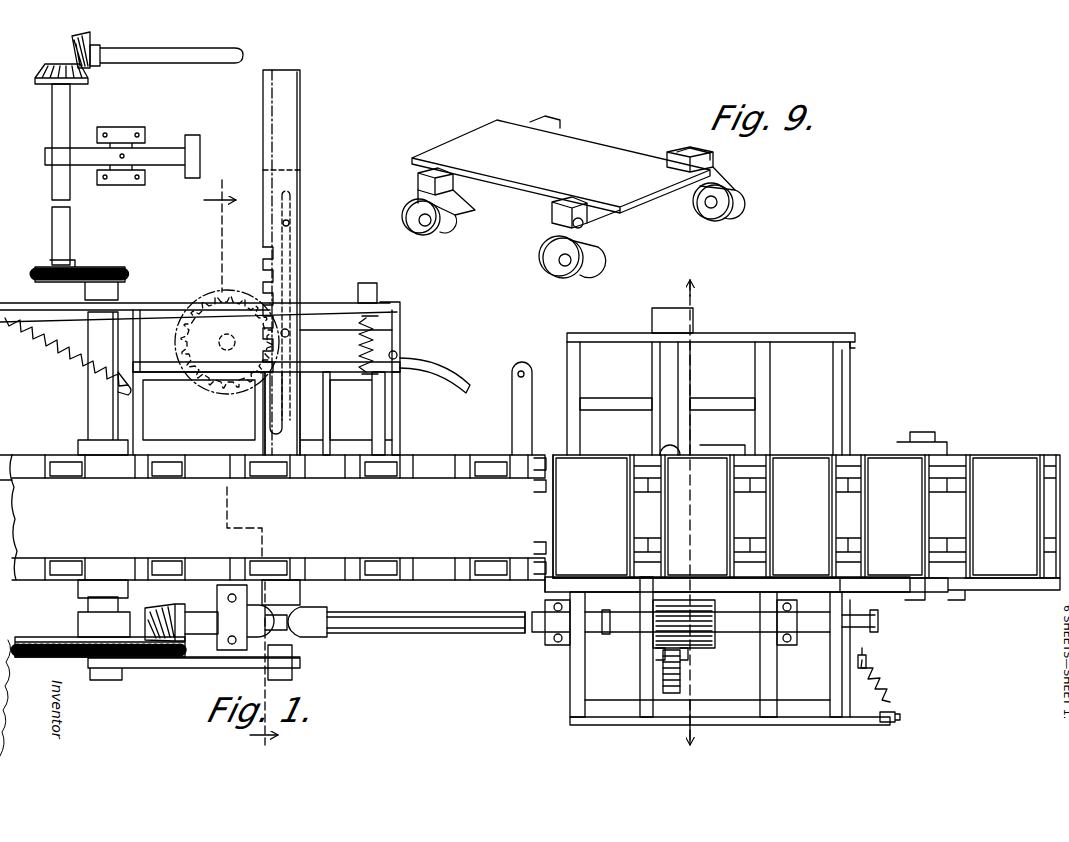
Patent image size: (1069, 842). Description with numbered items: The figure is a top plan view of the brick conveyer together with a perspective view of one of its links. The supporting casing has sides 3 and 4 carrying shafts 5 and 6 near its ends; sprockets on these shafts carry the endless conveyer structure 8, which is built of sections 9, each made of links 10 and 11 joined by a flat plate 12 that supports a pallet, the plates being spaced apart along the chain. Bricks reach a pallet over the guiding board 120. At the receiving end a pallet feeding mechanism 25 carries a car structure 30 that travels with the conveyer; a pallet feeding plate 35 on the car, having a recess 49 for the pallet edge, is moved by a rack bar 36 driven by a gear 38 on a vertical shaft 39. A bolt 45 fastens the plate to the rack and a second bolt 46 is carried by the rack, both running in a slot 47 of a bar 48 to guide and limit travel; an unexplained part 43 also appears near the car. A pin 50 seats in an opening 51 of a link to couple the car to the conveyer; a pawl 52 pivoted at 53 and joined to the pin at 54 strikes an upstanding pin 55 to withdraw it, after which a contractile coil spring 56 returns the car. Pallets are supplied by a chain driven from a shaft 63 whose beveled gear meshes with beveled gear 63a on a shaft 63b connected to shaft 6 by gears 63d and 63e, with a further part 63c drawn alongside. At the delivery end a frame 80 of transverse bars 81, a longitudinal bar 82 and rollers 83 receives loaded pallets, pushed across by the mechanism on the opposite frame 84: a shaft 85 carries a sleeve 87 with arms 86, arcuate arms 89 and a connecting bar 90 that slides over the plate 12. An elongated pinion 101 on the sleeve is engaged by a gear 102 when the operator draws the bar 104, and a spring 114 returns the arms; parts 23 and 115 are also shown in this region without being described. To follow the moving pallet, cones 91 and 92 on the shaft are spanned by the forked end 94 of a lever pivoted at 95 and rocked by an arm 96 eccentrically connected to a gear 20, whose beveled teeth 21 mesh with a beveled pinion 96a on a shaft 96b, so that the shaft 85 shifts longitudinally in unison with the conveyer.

In FIG. 1, the side of supporting casing 3 is at (352, 580).
In FIG. 1, the side of supporting casing 4 is at (452, 458).
In FIG. 1, the shaft 5 is at (922, 440).
In FIG. 1, the shaft 6 is at (88, 432).
In FIG. 1, the endless conveyer structure 8 is at (507, 585).
In FIG. 9, the section 9 is at (701, 193).
In FIG. 9, the link 10 is at (456, 196).
In FIG. 9, the link 11 is at (590, 240).
In FIG. 1, the flat plate 12 is at (582, 476).
In FIG. 9, the flat plate 12 is at (615, 155).
In FIG. 1, the gear 20 is at (48, 637).
In FIG. 1, the beveled teeth 21 is at (75, 660).
In FIG. 1, the drive shaft 23 is at (455, 636).
In FIG. 1, the pallet feeding mechanism 25 is at (145, 423).
In FIG. 1, the car structure 30 is at (161, 330).
In FIG. 1, the pallet feeding plate 35 is at (318, 328).
In FIG. 1, the rack bar 36 is at (291, 160).
In FIG. 1, the gear 38 is at (227, 292).
In FIG. 1, the vertical shaft 39 is at (216, 388).
In FIG. 1, the lever arm 43 is at (128, 391).
In FIG. 1, the bolt 45 is at (290, 330).
In FIG. 1, the second bolt 46 is at (290, 223).
In FIG. 1, the slot 47 is at (290, 402).
In FIG. 1, the bar 48 is at (266, 409).
In FIG. 1, the recess 49 is at (180, 378).
In FIG. 1, the pin 50 is at (396, 432).
In FIG. 1, the opening 51 is at (400, 319).
In FIG. 9, the opening 51 is at (584, 226).
In FIG. 1, the pawl 52 is at (418, 364).
In FIG. 1, the pivotal connection 53 is at (442, 370).
In FIG. 1, the connection 54 is at (368, 366).
In FIG. 1, the upstanding pin 55 is at (520, 370).
In FIG. 1, the contractile coil spring 56 is at (58, 350).
In FIG. 1, the shaft 63 is at (190, 58).
In FIG. 1, the beveled gear 63a is at (42, 76).
In FIG. 1, the shaft 63b is at (52, 172).
In FIG. 1, the frame rail 63c is at (48, 268).
In FIG. 1, the gear 63d is at (94, 68).
In FIG. 1, the gear 63e is at (142, 160).
In FIG. 1, the frame 80 is at (811, 332).
In FIG. 1, the horizontal transversely extending bar 81 is at (582, 366).
In FIG. 1, the longitudinally extending bar 82 is at (730, 333).
In FIG. 1, the roller 83 is at (690, 375).
In FIG. 1, the second rack or supporting frame 84 is at (878, 716).
In FIG. 1, the shaft 85 is at (420, 636).
In FIG. 1, the arm 86 is at (626, 704).
In FIG. 1, the sleeve 87 is at (745, 633).
In FIG. 1, the arcuate arm 89 is at (880, 621).
In FIG. 1, the bar 90 is at (801, 577).
In FIG. 1, the cone 91 is at (315, 640).
In FIG. 1, the cone 92 is at (252, 652).
In FIG. 1, the forked end 94 is at (295, 666).
In FIG. 1, the pivot 95 is at (300, 598).
In FIG. 1, the arm 96 is at (130, 668).
In FIG. 1, the beveled pinion 96a is at (160, 660).
In FIG. 1, the shaft 96b is at (200, 640).
In FIG. 1, the elongated pinion 101 is at (654, 632).
In FIG. 1, the gear 102 is at (682, 687).
In FIG. 1, the bar 104 is at (679, 318).
In FIG. 1, the spring 114 is at (882, 690).
In FIG. 1, the rod 115 is at (803, 720).
In FIG. 1, the guiding board 120 is at (34, 482).